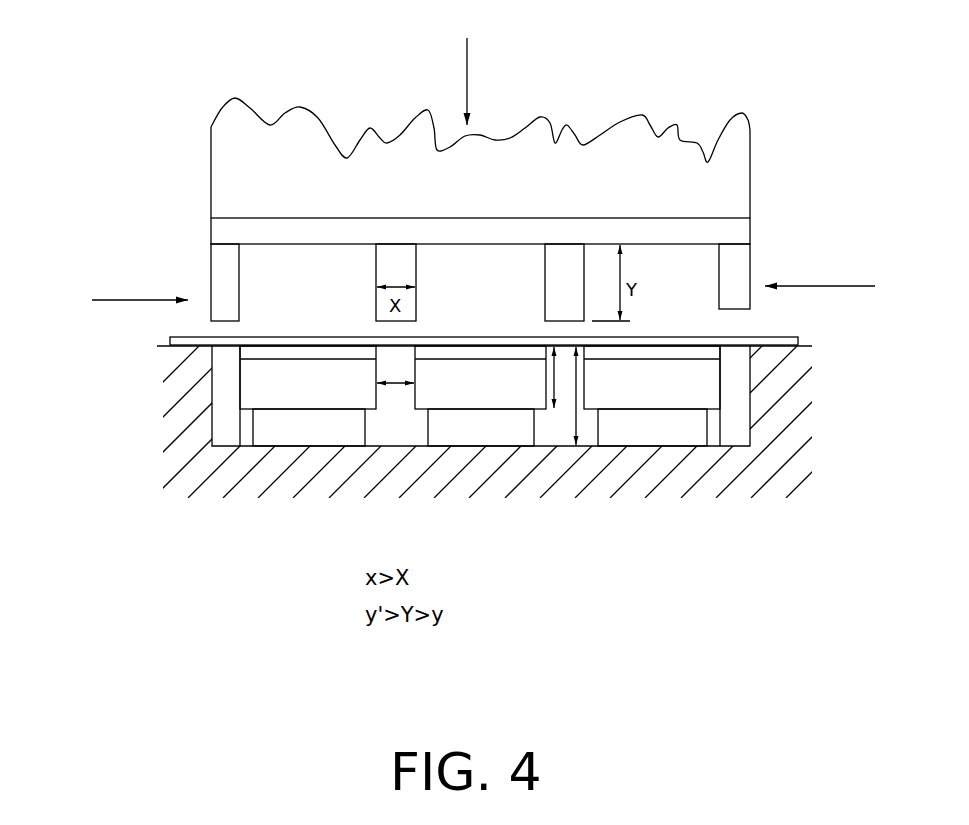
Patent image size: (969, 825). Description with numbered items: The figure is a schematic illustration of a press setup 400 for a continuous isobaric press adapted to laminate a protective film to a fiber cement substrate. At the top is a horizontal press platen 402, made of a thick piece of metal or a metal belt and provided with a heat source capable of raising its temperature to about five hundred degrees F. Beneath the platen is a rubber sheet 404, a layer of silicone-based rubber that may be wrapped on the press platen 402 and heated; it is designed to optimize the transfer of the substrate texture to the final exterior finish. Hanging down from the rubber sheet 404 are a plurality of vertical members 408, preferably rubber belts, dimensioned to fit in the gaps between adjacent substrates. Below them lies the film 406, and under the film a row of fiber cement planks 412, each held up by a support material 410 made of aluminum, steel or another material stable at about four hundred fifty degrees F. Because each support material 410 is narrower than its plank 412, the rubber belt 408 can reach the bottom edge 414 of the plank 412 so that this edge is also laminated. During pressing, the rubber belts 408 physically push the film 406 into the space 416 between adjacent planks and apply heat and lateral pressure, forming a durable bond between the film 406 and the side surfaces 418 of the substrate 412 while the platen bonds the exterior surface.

The press setup 400 is at (277, 67).
The press platen 402 is at (750, 168).
The rubber sheet 404 is at (211, 232).
The film 406 is at (170, 339).
The vertical members 408 is at (750, 278).
The support material 410 is at (688, 432).
The fiber cement plank 412 is at (250, 396).
The bottom edge 414 is at (377, 405).
The space 416 is at (400, 392).
The side surfaces 418 is at (240, 380).